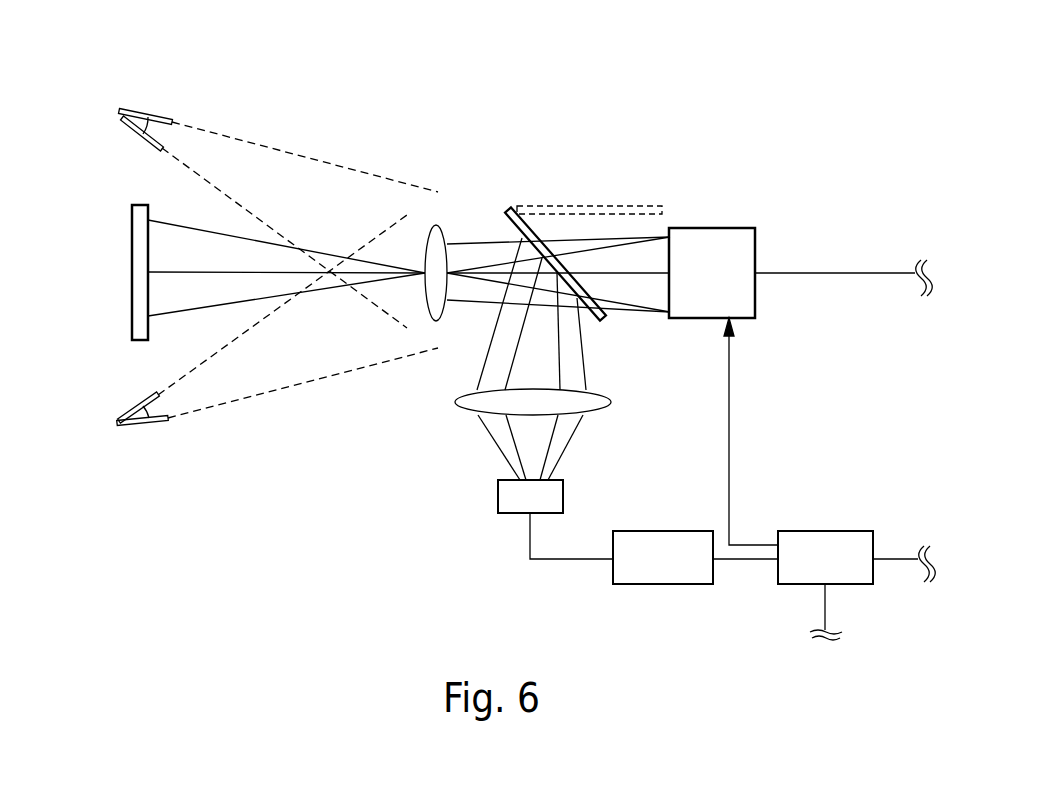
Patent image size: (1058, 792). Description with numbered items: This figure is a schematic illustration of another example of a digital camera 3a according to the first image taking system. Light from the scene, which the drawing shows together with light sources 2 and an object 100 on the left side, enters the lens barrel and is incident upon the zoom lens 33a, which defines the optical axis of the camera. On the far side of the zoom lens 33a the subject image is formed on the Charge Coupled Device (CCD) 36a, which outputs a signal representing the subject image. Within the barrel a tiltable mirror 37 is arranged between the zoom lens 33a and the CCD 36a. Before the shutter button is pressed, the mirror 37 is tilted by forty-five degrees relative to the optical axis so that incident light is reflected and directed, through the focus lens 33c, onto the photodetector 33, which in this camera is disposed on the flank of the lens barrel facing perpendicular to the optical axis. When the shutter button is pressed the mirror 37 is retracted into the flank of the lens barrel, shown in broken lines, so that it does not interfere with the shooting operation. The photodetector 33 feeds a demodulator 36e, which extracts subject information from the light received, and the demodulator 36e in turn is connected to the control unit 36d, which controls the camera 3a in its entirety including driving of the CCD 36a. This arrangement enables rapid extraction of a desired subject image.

The light source (LED) 2 is at (139, 96).
The object / target 100 is at (131, 258).
The digital camera 3a is at (549, 120).
The zoom lens 33a is at (440, 226).
The tiltable mirror 37 is at (547, 247).
The focus lens 33c is at (608, 393).
The photodetector 33 is at (563, 495).
The Charge Coupled Device (CCD) 36a is at (712, 228).
The demodulator 36e is at (663, 531).
The control unit 36d is at (853, 531).